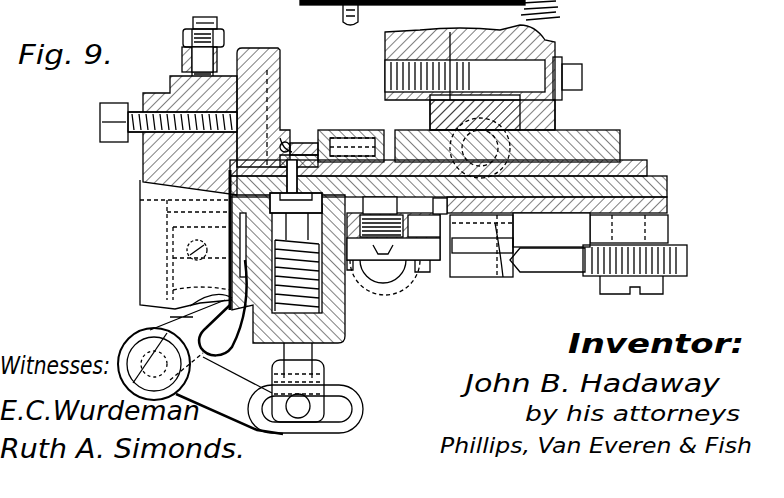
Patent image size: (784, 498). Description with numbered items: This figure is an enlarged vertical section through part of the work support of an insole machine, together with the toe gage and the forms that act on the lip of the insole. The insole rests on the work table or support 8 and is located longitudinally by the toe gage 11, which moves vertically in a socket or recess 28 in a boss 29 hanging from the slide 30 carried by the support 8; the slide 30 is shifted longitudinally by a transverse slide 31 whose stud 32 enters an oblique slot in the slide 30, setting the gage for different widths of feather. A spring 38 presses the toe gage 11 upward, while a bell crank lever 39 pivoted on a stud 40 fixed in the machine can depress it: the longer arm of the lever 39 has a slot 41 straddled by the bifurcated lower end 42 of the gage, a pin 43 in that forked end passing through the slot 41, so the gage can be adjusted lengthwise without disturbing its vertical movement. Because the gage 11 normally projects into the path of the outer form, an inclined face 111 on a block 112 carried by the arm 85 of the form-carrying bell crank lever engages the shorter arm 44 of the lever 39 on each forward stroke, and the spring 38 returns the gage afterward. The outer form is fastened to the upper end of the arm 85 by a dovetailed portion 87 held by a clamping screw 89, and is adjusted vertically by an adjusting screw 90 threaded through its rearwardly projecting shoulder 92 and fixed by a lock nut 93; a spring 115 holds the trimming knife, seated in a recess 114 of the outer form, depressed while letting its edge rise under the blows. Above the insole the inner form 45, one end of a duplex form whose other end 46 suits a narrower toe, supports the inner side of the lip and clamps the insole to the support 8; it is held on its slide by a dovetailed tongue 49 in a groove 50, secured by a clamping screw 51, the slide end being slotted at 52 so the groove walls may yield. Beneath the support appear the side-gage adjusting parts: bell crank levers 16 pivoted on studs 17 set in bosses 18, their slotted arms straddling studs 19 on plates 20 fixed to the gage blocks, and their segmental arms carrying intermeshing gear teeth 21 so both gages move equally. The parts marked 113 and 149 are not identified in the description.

The work table or support 8 is at (556, 206).
The toe gage 11 is at (290, 197).
The bell crank levers 16 is at (567, 268).
The studs 17 is at (655, 290).
The bosses 18 is at (658, 228).
The stud 19 is at (490, 268).
The plate 20 is at (505, 262).
The gear teeth 21 is at (660, 250).
The socket or recess 28 is at (345, 135).
The boss 29 is at (345, 325).
The slide 30 is at (660, 184).
The transverse slide 31 is at (397, 234).
The stud 32 is at (395, 272).
The spring 38 is at (340, 345).
The bell crank lever 39 is at (226, 378).
The stud 40 is at (138, 350).
The slot 41 is at (352, 412).
The bifurcated lower end 42 is at (312, 425).
The pin 43 is at (297, 418).
The shorter arm 44 is at (178, 326).
The inner form 45 is at (454, 77).
The form part 46 is at (622, 140).
The dovetailed tongue 49 is at (555, 118).
The groove or recess 50 is at (560, 107).
The clamping screw 51 is at (580, 72).
The slot 52 is at (452, 60).
The arm 85 is at (145, 167).
The dovetailed portion 87 is at (248, 95).
The clamping screw 89 is at (105, 127).
The adjusting screw 90 is at (217, 21).
The rearwardly projecting arm or shoulder 92 is at (182, 60).
The lock nut 93 is at (224, 40).
The inclined face 111 is at (170, 288).
The block 112 is at (170, 255).
The latch 113 is at (312, 142).
The recess 114 is at (307, 143).
The spring 115 is at (285, 138).
The spring 149 is at (548, 19).